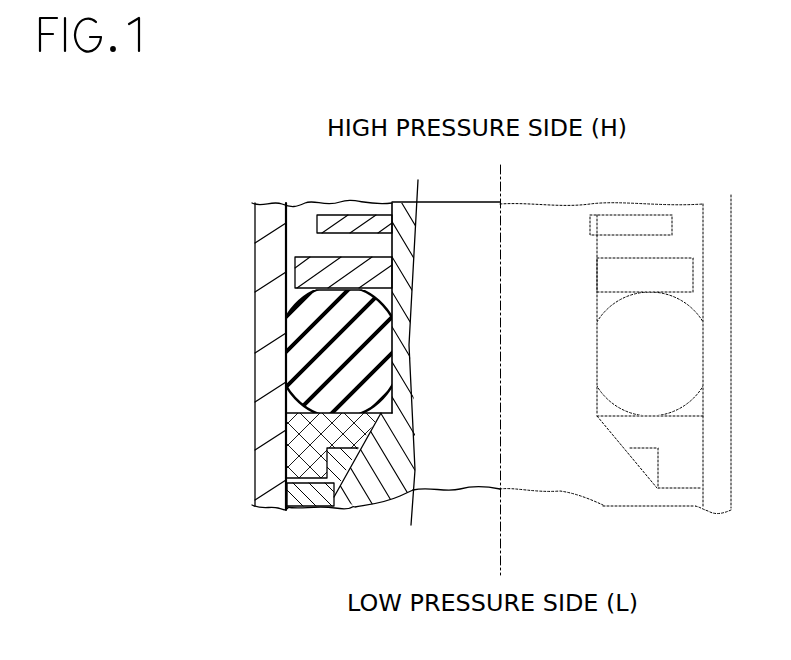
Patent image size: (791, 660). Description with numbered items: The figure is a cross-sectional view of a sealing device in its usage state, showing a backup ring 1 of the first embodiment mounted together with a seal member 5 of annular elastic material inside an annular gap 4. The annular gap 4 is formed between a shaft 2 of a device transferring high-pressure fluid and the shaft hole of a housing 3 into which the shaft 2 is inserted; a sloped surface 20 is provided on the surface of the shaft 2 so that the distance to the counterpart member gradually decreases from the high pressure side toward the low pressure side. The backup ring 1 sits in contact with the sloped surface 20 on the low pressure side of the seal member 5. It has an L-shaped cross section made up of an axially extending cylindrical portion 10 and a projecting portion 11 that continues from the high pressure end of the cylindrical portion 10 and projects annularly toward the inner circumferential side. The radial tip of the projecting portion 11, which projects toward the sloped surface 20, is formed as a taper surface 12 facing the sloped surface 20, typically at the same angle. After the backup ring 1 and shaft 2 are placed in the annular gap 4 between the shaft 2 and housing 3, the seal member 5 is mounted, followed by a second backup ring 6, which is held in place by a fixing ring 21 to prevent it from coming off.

The backup ring 1 is at (286, 434).
The shaft 2 is at (406, 490).
The housing 3 is at (256, 245).
The annular gap 4 is at (270, 306).
The seal member 5 is at (266, 368).
The second backup ring 6 is at (403, 277).
The cylindrical portion 10 is at (284, 478).
The projecting portion 11 is at (403, 383).
The taper surface 12 is at (400, 448).
The sloped surface 20 is at (376, 494).
The fixing ring 21 is at (405, 226).